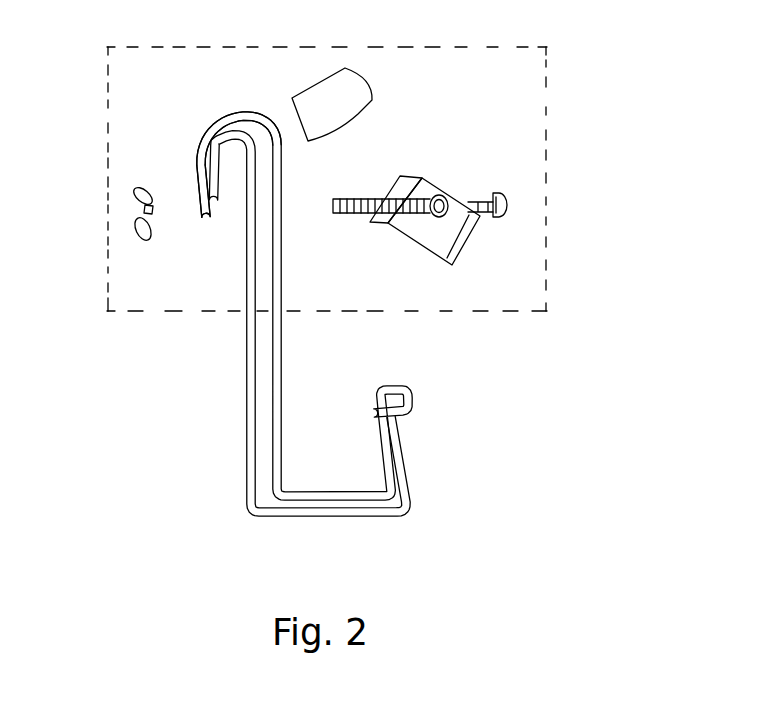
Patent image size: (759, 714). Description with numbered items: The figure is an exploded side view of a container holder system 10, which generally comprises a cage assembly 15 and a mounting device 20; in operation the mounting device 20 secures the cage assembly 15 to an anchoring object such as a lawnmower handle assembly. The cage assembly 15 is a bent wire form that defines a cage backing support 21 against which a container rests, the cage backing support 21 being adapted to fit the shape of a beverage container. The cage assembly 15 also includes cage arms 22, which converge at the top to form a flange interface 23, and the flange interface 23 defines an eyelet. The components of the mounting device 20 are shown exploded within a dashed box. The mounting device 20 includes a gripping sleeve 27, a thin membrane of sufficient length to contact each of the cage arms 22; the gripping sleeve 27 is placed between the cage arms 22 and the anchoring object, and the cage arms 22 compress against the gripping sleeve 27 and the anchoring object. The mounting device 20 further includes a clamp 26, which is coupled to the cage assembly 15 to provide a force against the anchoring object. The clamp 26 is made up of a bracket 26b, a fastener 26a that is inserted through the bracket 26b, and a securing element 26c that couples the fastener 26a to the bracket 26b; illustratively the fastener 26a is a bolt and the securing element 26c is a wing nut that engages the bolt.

The container holder system 10 is at (655, 180).
The cage assembly 15 is at (500, 383).
The mounting device 20 is at (107, 130).
The cage backing support 21 is at (228, 252).
The cage arms 22 is at (243, 113).
The flange interface 23 is at (196, 195).
The clamp 26 is at (448, 178).
The fastener 26a is at (499, 221).
The bracket 26b is at (418, 247).
The securing element 26c is at (140, 237).
The gripping sleeve 27 is at (345, 107).